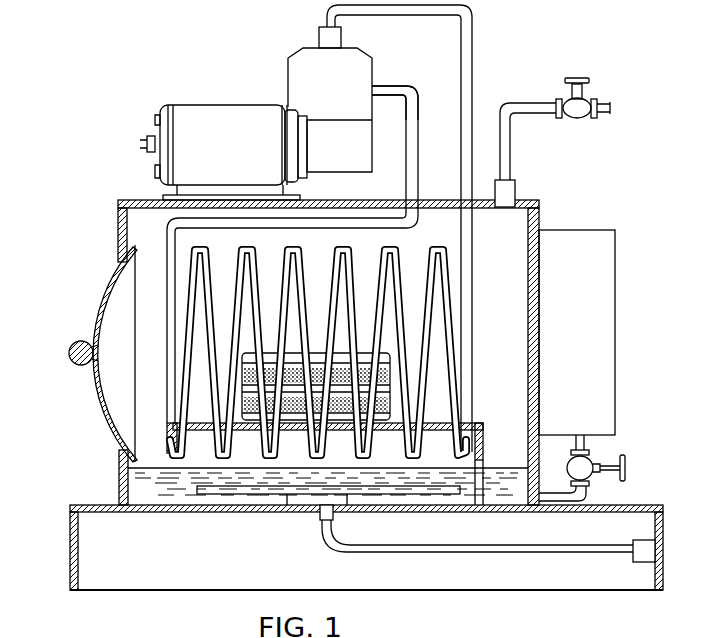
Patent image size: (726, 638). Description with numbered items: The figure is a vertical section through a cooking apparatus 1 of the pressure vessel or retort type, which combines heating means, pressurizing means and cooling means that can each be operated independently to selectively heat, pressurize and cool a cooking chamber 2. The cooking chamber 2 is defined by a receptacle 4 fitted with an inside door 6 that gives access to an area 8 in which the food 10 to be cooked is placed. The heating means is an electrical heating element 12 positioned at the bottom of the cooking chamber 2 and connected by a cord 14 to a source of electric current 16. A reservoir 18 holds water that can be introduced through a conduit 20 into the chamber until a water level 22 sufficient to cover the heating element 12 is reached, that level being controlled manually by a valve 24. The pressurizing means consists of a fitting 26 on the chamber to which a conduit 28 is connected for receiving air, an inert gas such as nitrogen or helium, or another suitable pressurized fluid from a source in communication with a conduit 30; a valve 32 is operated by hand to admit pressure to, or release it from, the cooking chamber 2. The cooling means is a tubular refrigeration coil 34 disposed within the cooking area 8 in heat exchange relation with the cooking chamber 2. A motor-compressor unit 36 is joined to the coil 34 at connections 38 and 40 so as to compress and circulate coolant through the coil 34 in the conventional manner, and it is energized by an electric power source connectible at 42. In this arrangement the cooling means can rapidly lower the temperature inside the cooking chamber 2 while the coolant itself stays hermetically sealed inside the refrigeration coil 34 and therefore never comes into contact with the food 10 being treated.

The cooking apparatus 1 is at (80, 297).
The cooking chamber 2 is at (512, 291).
The receptacle 4 is at (137, 200).
The inside door 6 is at (107, 412).
The area 8 is at (445, 425).
The food 10 is at (312, 355).
The electrical heating element 12 is at (290, 494).
The cord 14 is at (446, 550).
The source of electric current 16 is at (653, 552).
The reservoir 18 is at (600, 300).
The conduit 20 is at (585, 500).
The water level 22 is at (490, 468).
The valve 24 is at (597, 465).
The fitting 26 is at (512, 196).
The conduit 28 is at (510, 143).
The conduit 30 is at (598, 106).
The valve 32 is at (565, 97).
The tubular refrigeration coil 34 is at (173, 352).
The motor-compressor unit 36 is at (272, 76).
The coil connection 38 is at (341, 45).
The coil connection 40 is at (374, 86).
The electric power source connection 42 is at (140, 145).